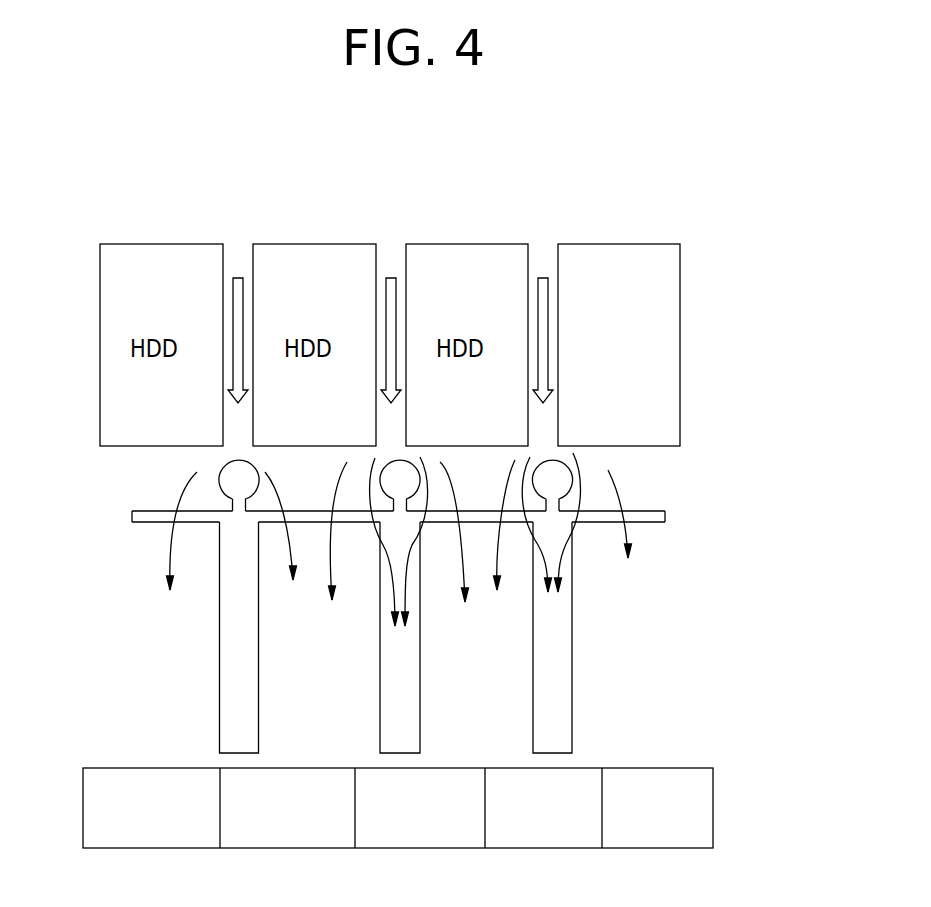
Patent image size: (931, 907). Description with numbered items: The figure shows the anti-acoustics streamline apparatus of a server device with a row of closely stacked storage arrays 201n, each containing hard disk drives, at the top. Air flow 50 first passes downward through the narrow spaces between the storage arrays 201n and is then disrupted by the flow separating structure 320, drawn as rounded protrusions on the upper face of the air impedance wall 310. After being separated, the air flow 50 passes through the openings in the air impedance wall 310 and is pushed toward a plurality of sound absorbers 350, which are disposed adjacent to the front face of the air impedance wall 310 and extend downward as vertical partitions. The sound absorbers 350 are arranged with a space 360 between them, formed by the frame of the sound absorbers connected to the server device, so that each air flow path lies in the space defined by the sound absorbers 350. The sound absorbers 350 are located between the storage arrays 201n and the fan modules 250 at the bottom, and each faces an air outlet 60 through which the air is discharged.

The air flow 50 is at (238, 276).
The storage arrays 201n is at (637, 243).
The flow separating structure 320 is at (573, 493).
The air impedance wall 310 is at (666, 517).
The sound absorbers 350 is at (219, 664).
The space 360 is at (192, 726).
The fan modules 250 is at (714, 808).
The air outlet 60 is at (427, 887).